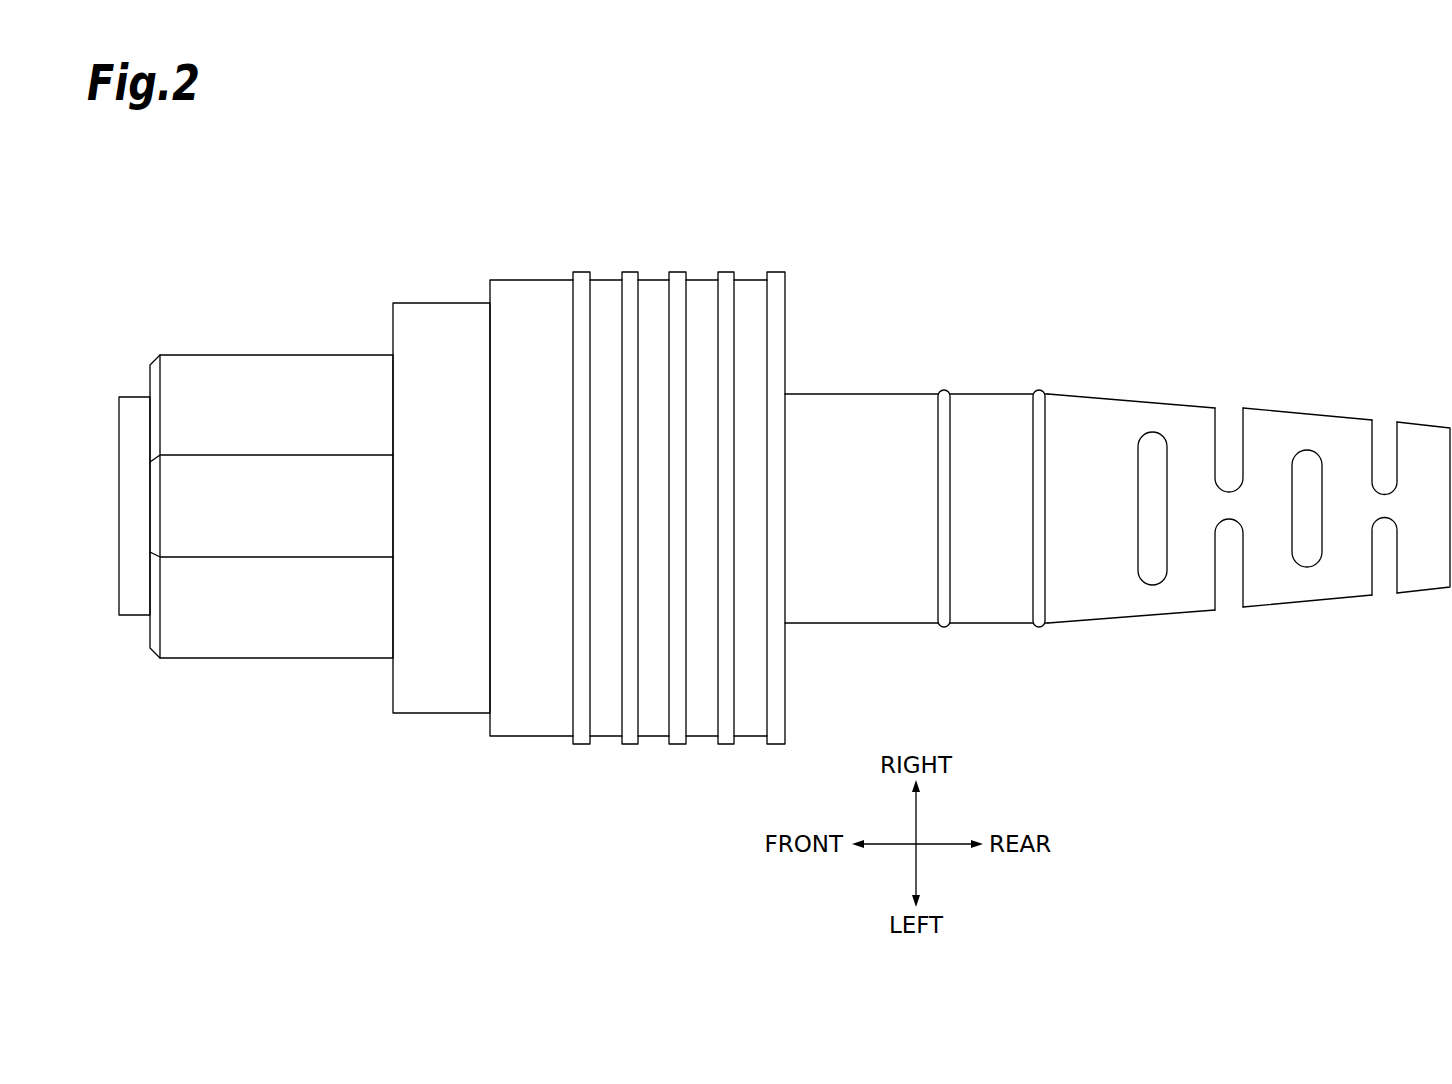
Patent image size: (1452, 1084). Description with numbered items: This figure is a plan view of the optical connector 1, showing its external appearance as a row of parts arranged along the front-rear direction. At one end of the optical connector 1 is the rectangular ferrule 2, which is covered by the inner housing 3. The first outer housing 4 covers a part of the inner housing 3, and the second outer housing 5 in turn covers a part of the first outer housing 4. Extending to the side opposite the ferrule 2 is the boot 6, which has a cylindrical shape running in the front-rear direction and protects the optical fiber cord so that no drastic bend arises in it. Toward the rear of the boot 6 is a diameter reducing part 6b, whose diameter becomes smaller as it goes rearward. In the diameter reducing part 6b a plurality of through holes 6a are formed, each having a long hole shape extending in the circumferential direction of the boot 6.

The optical connector 1 is at (1116, 191).
The ferrule 2 is at (131, 396).
The inner housing 3 is at (232, 354).
The first outer housing 4 is at (446, 303).
The second outer housing 5 is at (532, 280).
The boot 6 is at (920, 388).
The through holes 6a is at (1220, 433).
The diameter reducing part 6b is at (1165, 406).